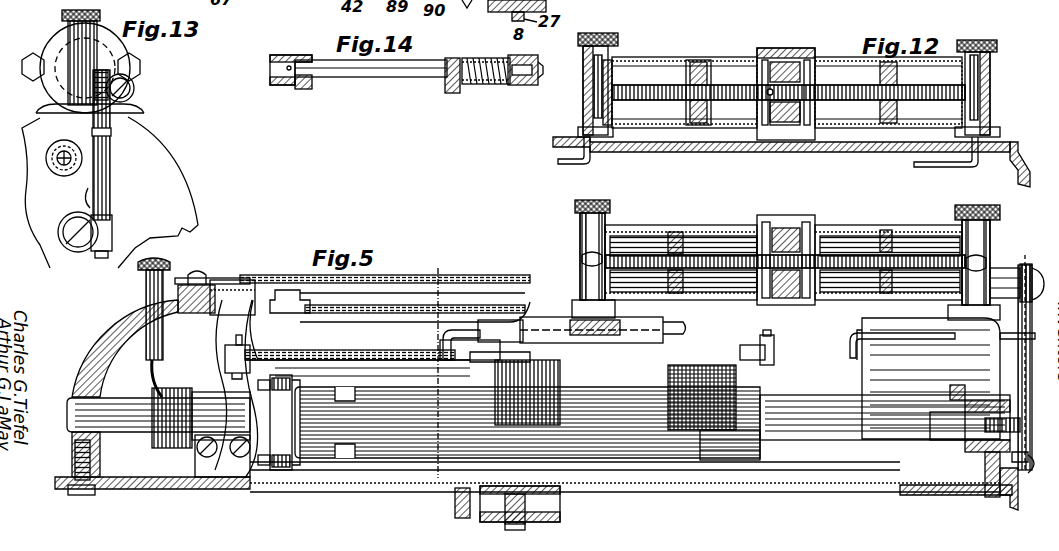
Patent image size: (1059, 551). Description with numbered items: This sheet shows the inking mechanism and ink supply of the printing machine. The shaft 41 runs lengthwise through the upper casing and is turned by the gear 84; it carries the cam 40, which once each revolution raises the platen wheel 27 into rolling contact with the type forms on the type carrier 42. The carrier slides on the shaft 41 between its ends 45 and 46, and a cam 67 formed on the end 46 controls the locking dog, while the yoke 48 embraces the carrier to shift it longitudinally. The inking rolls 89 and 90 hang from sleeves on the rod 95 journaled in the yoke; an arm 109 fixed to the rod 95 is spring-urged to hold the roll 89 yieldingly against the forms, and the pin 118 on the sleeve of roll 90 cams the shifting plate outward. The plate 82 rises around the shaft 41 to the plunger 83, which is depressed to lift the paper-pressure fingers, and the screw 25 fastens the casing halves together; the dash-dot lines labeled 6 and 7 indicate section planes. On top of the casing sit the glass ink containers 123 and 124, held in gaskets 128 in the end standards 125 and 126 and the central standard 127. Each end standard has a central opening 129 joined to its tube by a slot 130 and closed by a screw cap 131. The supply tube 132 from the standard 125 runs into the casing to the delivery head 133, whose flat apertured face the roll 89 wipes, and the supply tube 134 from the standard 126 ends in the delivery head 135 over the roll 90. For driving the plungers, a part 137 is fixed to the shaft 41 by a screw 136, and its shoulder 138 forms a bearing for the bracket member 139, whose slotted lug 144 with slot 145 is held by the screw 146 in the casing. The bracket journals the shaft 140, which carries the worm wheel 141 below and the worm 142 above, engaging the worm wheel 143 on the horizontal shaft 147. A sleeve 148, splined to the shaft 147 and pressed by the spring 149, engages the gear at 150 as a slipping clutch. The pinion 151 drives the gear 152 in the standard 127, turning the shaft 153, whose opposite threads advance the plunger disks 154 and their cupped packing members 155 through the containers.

In FIG. 5, the plate 6 is at (252, 300).
In FIG. 5, the frame member 7 is at (505, 527).
In FIG. 5, the screw 25 is at (90, 495).
In FIG. 5, the platen wheel 27 is at (525, 520).
In FIG. 5, the cam 40 is at (942, 396).
In FIG. 5, the shaft 41 is at (120, 432).
In FIG. 5, the type carrier 42 is at (330, 463).
In FIG. 5, the carrier end 45 is at (712, 440).
In FIG. 5, the carrier end 46 is at (287, 470).
In FIG. 5, the yoke 48 is at (465, 346).
In FIG. 5, the cam 67 is at (266, 478).
In FIG. 5, the plate 82 is at (152, 366).
In FIG. 5, the plunger 83 is at (146, 300).
In FIG. 5, the gear 84 is at (160, 448).
In FIG. 5, the inking roll 89 is at (560, 377).
In FIG. 5, the inking roll 90 is at (668, 377).
In FIG. 5, the rod 95 is at (393, 344).
In FIG. 5, the arm 109 is at (226, 357).
In FIG. 5, the pin 118 is at (779, 343).
In FIG. 12, the ink container 123 is at (688, 58).
In FIG. 5, the ink container 123 is at (702, 226).
In FIG. 12, the ink container 124 is at (840, 58).
In FIG. 5, the ink container 124 is at (892, 228).
In FIG. 12, the end standard 125 is at (612, 48).
In FIG. 5, the end standard 125 is at (578, 232).
In FIG. 12, the end standard 126 is at (992, 56).
In FIG. 5, the end standard 126 is at (986, 243).
In FIG. 12, the central standard 127 is at (790, 48).
In FIG. 5, the central standard 127 is at (782, 215).
In FIG. 12, the gasket 128 is at (615, 65).
In FIG. 12, the central opening 129 is at (585, 62).
In FIG. 12, the slot 130 is at (596, 90).
In FIG. 12, the screw cap 131 is at (597, 33).
In FIG. 12, the supply tube 132 is at (600, 160).
In FIG. 5, the supply tube 132 is at (458, 328).
In FIG. 5, the delivery head 133 is at (440, 348).
In FIG. 12, the supply tube 134 is at (975, 166).
In FIG. 5, the supply tube 134 is at (907, 360).
In FIG. 5, the delivery head 135 is at (856, 357).
In FIG. 5, the screw 136 is at (1018, 490).
In FIG. 5, the part 137 is at (985, 455).
In FIG. 5, the shoulder 138 is at (975, 424).
In FIG. 5, the bracket member 139 is at (935, 390).
In FIG. 13, the shaft 140 is at (110, 178).
In FIG. 5, the shaft 140 is at (1018, 364).
In FIG. 5, the worm wheel 141 is at (1016, 464).
In FIG. 5, the worm 142 is at (1018, 298).
In FIG. 13, the worm wheel 143 is at (128, 98).
In FIG. 14, the worm wheel 143 is at (525, 85).
In FIG. 5, the worm wheel 143 is at (1050, 278).
In FIG. 13, the lug 144 is at (72, 212).
In FIG. 13, the slot 145 is at (62, 146).
In FIG. 13, the screw 146 is at (60, 165).
In FIG. 14, the horizontal shaft 147 is at (352, 72).
In FIG. 14, the sleeve 148 is at (490, 58).
In FIG. 14, the spring 149 is at (478, 84).
In FIG. 5, the tooth engagement 150 is at (1026, 264).
In FIG. 14, the pinion 151 is at (275, 85).
In FIG. 12, the gear 152 is at (783, 126).
In FIG. 5, the gear 152 is at (795, 232).
In FIG. 12, the shaft 153 is at (830, 87).
In FIG. 5, the shaft 153 is at (835, 257).
In FIG. 12, the plunger disk 154 is at (711, 67).
In FIG. 5, the plunger disk 154 is at (690, 236).
In FIG. 12, the packing member 155 is at (708, 70).